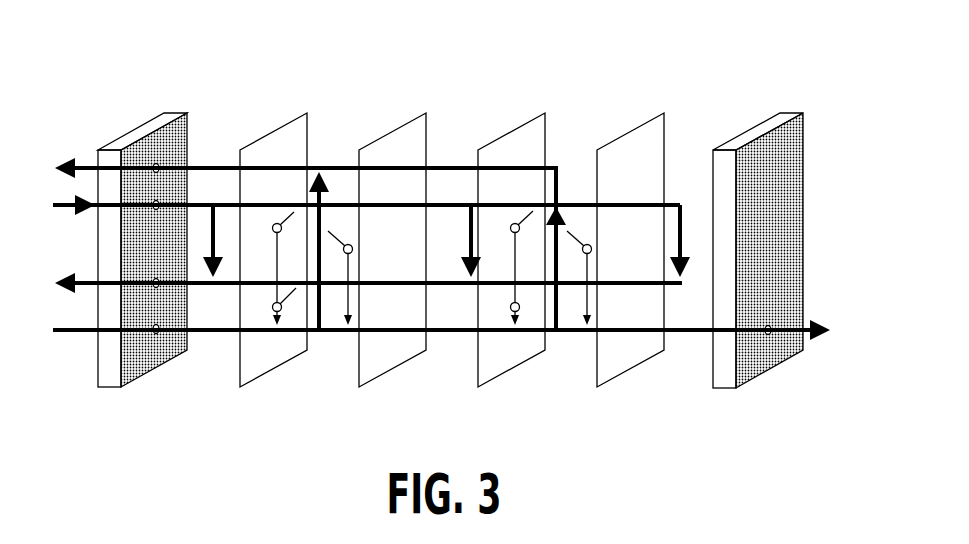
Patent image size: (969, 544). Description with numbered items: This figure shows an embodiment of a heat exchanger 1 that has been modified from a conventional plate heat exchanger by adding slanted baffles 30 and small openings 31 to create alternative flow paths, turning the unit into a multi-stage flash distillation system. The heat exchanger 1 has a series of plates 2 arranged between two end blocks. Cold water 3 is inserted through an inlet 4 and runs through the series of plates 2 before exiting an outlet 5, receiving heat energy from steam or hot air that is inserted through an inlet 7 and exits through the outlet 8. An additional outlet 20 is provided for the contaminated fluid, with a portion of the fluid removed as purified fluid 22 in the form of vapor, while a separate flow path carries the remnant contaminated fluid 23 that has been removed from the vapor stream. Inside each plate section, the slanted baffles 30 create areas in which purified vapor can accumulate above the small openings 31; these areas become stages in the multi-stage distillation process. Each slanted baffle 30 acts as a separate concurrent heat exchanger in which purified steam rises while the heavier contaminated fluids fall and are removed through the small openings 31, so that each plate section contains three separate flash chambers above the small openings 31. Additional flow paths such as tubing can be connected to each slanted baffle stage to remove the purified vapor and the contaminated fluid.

The heat exchanger 1 is at (785, 58).
The plates 2 is at (250, 383).
The cold water 3 is at (452, 249).
The inlet 4 is at (159, 333).
The outlet 5 is at (159, 167).
The inlet 7 is at (159, 204).
The outlet 8 is at (159, 285).
The additional outlet 20 is at (768, 335).
The purified fluid 22 is at (275, 291).
The remnant contaminated fluid 23 is at (559, 192).
The slanted baffles 30 is at (294, 212).
The small openings 31 is at (278, 223).